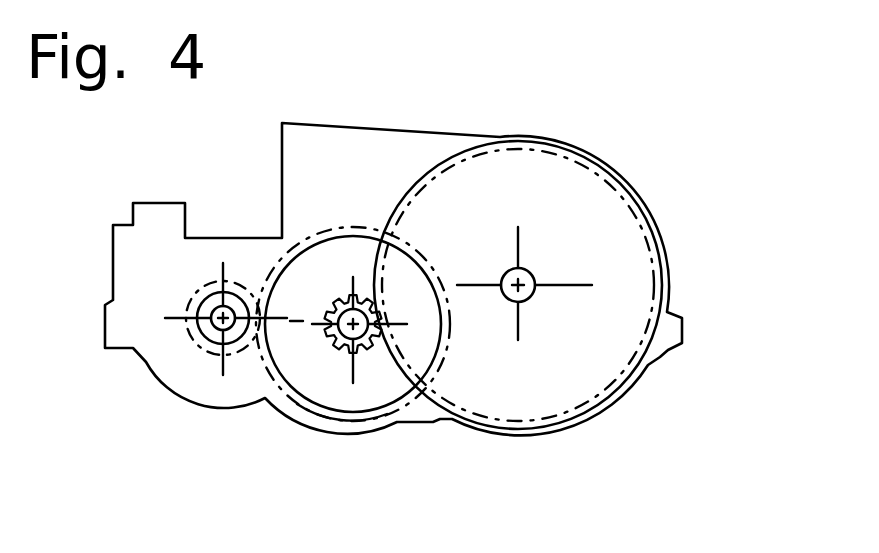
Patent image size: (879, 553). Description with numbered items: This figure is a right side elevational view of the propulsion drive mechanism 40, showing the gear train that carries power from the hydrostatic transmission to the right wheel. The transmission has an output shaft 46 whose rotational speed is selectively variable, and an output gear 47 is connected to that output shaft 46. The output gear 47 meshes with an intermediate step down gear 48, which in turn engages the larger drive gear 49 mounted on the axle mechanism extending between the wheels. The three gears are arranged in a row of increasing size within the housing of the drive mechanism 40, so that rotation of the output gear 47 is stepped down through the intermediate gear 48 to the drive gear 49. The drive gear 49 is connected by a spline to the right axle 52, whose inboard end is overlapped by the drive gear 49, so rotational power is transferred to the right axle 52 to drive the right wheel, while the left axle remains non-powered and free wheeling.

The propulsion drive mechanism 40 is at (422, 105).
The output shaft 46 is at (238, 334).
The output gear 47 is at (201, 349).
The intermediate step down gear 48 is at (380, 422).
The drive gear 49 is at (497, 142).
The right axle 52 is at (531, 297).